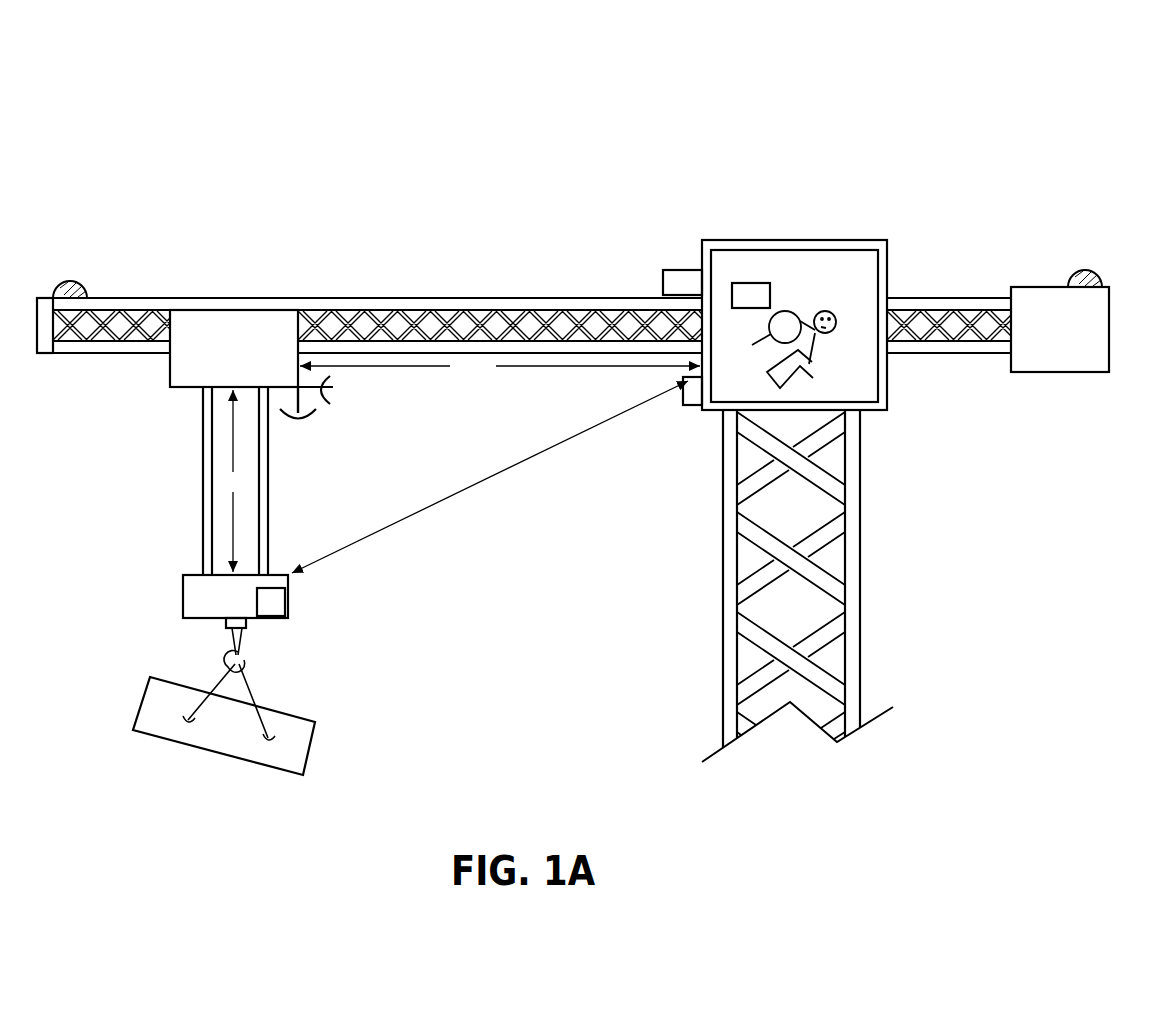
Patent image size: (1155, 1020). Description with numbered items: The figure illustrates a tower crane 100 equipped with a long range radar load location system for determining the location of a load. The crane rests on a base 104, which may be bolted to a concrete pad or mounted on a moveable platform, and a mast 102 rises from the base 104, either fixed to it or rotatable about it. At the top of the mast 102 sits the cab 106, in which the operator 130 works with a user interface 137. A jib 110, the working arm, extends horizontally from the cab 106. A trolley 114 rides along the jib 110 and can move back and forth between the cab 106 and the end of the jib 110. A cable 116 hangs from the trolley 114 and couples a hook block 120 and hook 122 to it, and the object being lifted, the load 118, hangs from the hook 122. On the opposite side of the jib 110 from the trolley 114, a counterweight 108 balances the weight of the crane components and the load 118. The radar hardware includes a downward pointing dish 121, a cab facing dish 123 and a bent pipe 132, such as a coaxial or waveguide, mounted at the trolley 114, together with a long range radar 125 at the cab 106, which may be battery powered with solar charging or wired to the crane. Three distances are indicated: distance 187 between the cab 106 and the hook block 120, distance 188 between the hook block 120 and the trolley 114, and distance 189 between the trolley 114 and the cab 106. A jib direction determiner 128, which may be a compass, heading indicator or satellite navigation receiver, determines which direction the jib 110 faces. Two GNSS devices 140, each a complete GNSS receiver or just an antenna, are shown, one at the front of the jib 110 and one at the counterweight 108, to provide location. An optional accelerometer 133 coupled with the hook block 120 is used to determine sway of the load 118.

The tower crane 100 is at (468, 79).
The mast 102 is at (860, 597).
The base 104 is at (872, 713).
The cab 106 is at (892, 247).
The counterweight 108 is at (1031, 286).
The jib 110 is at (462, 296).
The trolley 114 is at (238, 311).
The cable 116 is at (200, 420).
The load 118 is at (145, 700).
The hook block 120 is at (182, 597).
The downward pointing dish 121 is at (313, 424).
The hook 122 is at (244, 657).
The cab facing dish 123 is at (345, 397).
The long range radar 125 is at (681, 395).
The jib direction determiner 128 is at (660, 283).
The operator 130 is at (820, 308).
The bent pipe 132 is at (303, 394).
The accelerometer 133 is at (277, 611).
The user interface 137 is at (745, 282).
The GNSS device 140 is at (76, 283).
The distance 187 is at (490, 477).
The distance 188 is at (233, 481).
The distance 189 is at (500, 366).